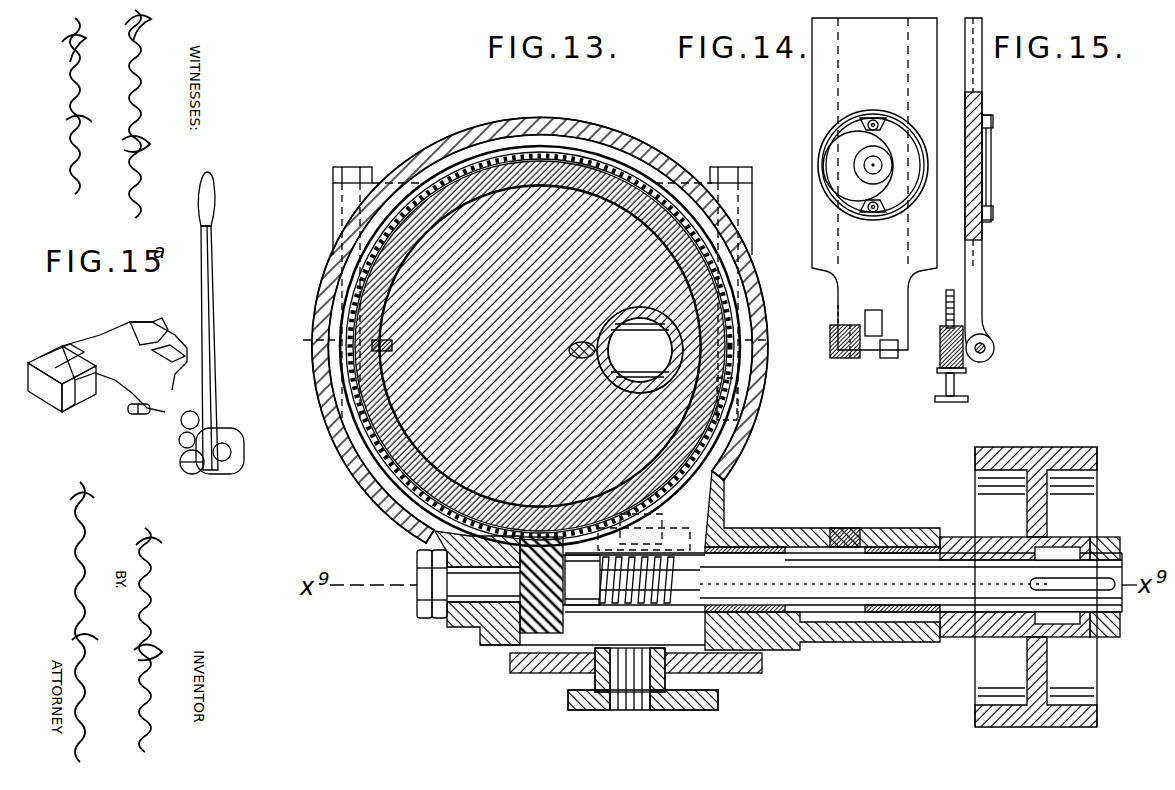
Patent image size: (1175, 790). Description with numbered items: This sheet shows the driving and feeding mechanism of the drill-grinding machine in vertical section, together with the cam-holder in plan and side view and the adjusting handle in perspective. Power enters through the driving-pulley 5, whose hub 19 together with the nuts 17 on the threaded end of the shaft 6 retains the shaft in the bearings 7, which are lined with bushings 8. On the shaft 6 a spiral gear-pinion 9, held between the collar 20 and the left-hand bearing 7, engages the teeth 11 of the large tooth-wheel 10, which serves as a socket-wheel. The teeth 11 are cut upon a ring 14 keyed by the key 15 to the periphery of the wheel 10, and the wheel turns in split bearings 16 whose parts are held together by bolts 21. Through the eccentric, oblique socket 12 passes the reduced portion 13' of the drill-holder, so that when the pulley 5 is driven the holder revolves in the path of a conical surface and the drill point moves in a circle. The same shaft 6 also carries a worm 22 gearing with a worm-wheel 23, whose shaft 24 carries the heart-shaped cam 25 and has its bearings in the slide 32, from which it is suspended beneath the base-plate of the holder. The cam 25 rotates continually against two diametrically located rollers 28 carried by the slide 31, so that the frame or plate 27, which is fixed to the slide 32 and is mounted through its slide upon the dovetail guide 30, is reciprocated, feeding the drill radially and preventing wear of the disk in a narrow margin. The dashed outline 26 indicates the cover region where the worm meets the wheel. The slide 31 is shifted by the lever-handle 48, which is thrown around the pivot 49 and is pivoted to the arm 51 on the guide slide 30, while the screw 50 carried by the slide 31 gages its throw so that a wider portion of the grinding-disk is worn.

In FIG. 13, the driving-pulley 5 is at (1085, 500).
In FIG. 13, the shaft 6 is at (1112, 560).
In FIG. 13, the bearings 7 is at (470, 624).
In FIG. 13, the bushings 8 is at (782, 547).
In FIG. 13, the spiral gear-pinion 9 is at (545, 612).
In FIG. 13, the tooth-wheel 10 is at (465, 225).
In FIG. 13, the teeth 11 is at (596, 168).
In FIG. 13, the socket 12 is at (676, 378).
In FIG. 13, the reduced portion of the holder 13' is at (640, 350).
In FIG. 13, the ring 14 is at (432, 500).
In FIG. 13, the key 15 is at (375, 350).
In FIG. 13, the split bearings 16 is at (333, 207).
In FIG. 13, the nuts 17 is at (437, 620).
In FIG. 13, the hub 19 is at (960, 537).
In FIG. 13, the collar 20 is at (578, 605).
In FIG. 13, the bolts 21 is at (350, 167).
In FIG. 13, the worm 22 is at (649, 600).
In FIG. 13, the worm-wheel 23 is at (712, 583).
In FIG. 13, the shaft of the worm-wheel 24 is at (638, 700).
In FIG. 13, the heart-shaped cam 25 is at (596, 710).
In FIG. 14, the heart-shaped cam 25 is at (845, 150).
In FIG. 13, the cover 26 is at (662, 526).
In FIG. 13, the frame or plate 27 is at (720, 530).
In FIG. 14, the rollers 28 is at (873, 118).
In FIG. 15A, the dovetail guide 30 is at (86, 425).
In FIG. 14, the slide 31 is at (874, 188).
In FIG. 15, the slide 31 is at (972, 286).
In FIG. 15A, the slide 31 is at (124, 365).
In FIG. 13, the slide 32 is at (750, 673).
In FIG. 15A, the lever-handle 48 is at (213, 313).
In FIG. 15A, the pivot 49 is at (197, 476).
In FIG. 15, the screw 50 is at (960, 386).
In FIG. 15A, the screw 50 is at (141, 416).
In FIG. 15A, the arm 51 is at (242, 451).